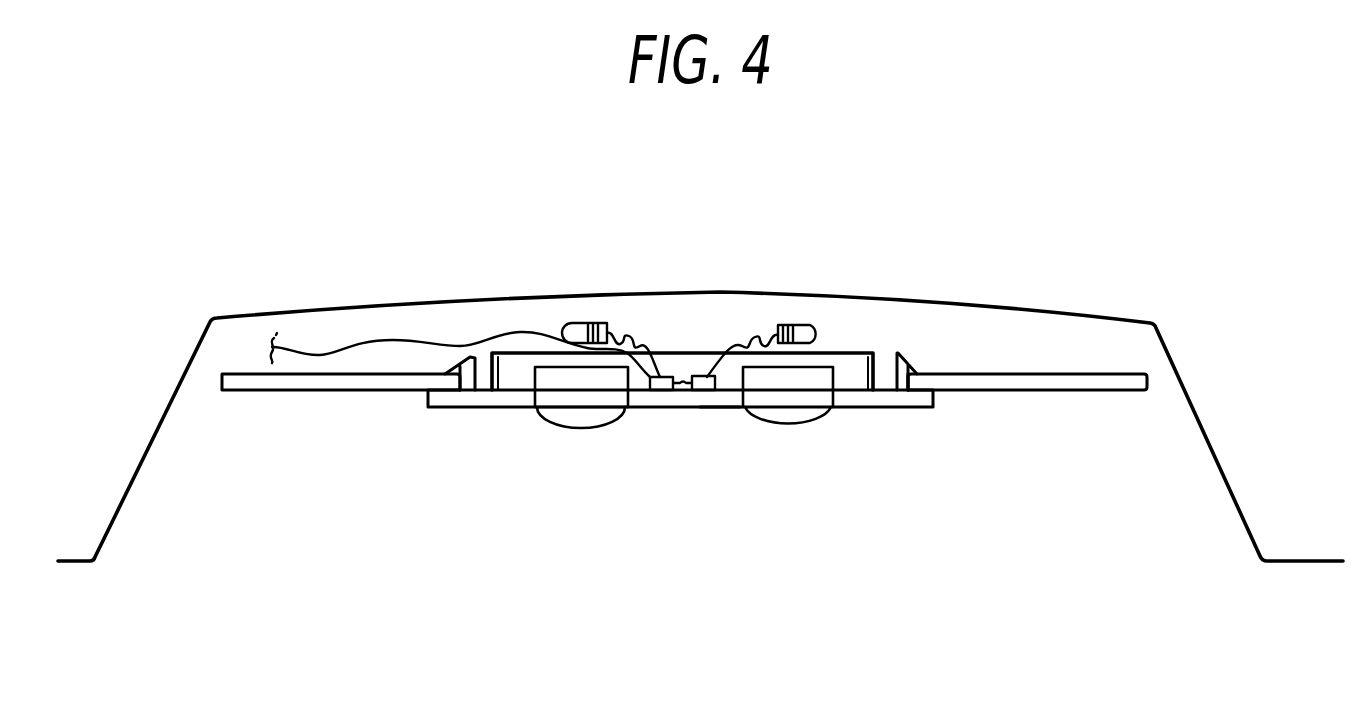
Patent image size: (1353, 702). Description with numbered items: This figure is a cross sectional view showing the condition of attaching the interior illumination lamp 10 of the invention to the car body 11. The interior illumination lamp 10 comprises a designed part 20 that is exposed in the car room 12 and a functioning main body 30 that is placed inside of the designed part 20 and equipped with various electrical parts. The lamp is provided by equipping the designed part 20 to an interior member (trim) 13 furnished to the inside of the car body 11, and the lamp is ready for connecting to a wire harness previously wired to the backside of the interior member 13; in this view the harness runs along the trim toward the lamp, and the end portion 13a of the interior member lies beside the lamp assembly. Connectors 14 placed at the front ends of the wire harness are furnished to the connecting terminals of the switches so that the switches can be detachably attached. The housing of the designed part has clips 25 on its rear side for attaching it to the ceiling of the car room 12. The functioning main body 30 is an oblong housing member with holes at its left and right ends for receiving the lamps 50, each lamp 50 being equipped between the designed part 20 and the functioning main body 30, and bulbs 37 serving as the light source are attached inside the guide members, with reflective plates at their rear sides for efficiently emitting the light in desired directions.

The interior illumination lamp 10 is at (538, 449).
The car body 11 is at (1052, 311).
The car room 12 is at (713, 523).
The interior member (trim) 13 is at (1118, 391).
The end portion of mounting plate 13a is at (885, 376).
The connector 14 is at (666, 376).
The designed part 20 is at (874, 407).
The clip 25 is at (469, 355).
The functioning main body 30 is at (858, 350).
The bulb 37 is at (580, 322).
The lamp 50 is at (620, 431).